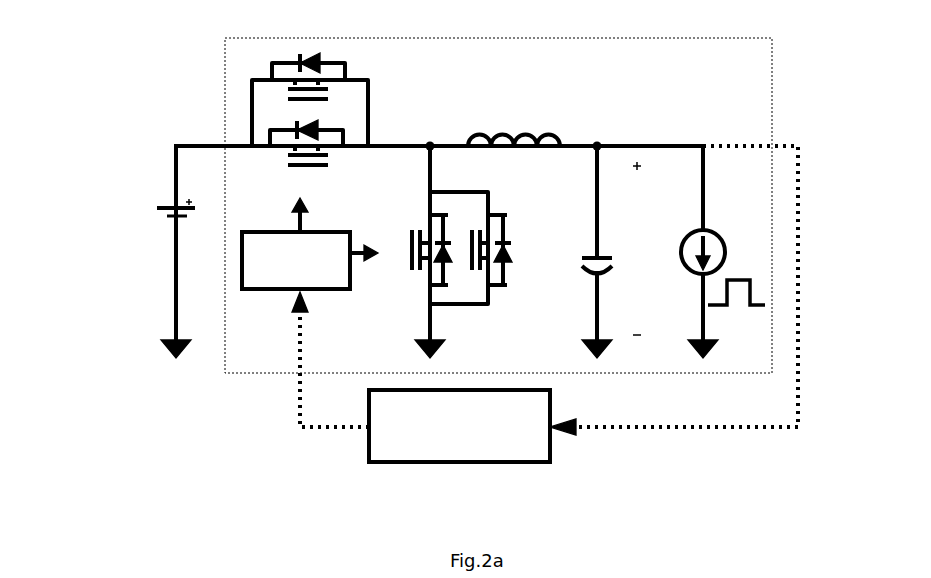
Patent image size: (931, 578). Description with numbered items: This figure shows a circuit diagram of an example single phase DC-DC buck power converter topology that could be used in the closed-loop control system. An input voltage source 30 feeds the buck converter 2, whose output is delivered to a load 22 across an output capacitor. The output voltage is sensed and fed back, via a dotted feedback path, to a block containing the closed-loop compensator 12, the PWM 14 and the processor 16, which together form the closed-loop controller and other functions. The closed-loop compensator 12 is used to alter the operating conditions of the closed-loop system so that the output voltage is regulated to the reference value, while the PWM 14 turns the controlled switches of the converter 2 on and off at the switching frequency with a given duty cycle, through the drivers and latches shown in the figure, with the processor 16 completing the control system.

The power converter 2 is at (665, 38).
The input voltage source 30 is at (132, 178).
The load current source 22 is at (636, 226).
The closed-loop compensator 12 is at (497, 455).
The PWM 14 is at (497, 455).
The processor 16 is at (527, 455).